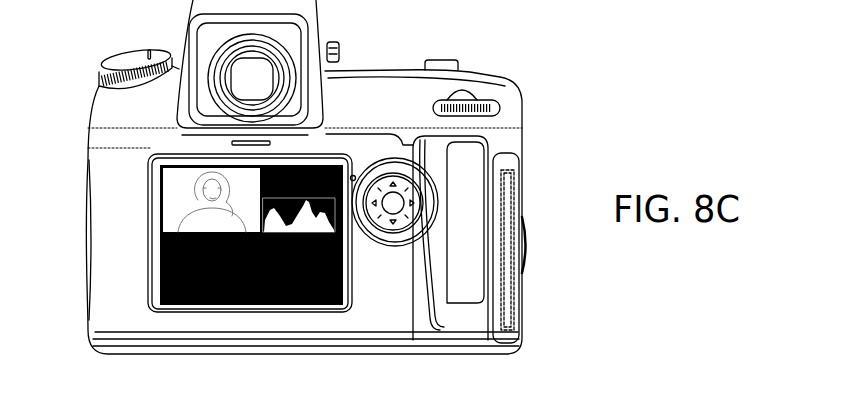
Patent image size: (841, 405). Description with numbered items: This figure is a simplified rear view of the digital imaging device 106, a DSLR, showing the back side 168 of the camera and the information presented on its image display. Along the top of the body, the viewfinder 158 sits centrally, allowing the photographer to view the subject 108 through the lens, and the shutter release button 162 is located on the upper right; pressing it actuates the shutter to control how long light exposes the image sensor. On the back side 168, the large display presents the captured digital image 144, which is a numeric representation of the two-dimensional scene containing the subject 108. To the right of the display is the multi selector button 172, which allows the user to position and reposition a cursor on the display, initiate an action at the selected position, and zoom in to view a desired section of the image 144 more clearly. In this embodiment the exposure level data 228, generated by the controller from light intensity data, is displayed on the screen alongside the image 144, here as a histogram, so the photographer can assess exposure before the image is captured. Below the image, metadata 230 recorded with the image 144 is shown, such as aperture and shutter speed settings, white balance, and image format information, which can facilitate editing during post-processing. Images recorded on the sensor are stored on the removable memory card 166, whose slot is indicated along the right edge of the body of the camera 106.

The digital imaging device 106 is at (99, 364).
The subject 108 is at (197, 180).
The digital image 144 is at (179, 218).
The viewfinder 158 is at (238, 90).
The shutter release button 162 is at (443, 62).
The removable memory card 166 is at (511, 297).
The back side 168 is at (453, 330).
The multi selector button 172 is at (403, 204).
The exposure level data 228 is at (315, 228).
The metadata 230 is at (227, 278).